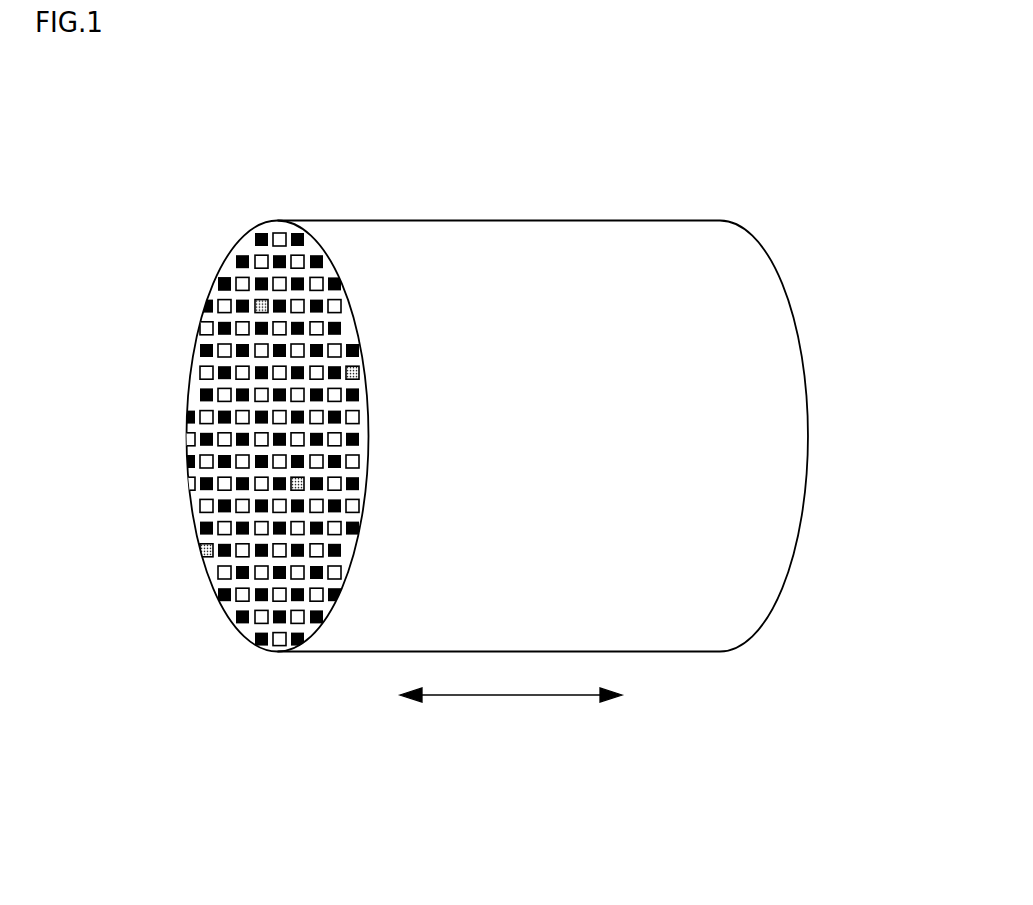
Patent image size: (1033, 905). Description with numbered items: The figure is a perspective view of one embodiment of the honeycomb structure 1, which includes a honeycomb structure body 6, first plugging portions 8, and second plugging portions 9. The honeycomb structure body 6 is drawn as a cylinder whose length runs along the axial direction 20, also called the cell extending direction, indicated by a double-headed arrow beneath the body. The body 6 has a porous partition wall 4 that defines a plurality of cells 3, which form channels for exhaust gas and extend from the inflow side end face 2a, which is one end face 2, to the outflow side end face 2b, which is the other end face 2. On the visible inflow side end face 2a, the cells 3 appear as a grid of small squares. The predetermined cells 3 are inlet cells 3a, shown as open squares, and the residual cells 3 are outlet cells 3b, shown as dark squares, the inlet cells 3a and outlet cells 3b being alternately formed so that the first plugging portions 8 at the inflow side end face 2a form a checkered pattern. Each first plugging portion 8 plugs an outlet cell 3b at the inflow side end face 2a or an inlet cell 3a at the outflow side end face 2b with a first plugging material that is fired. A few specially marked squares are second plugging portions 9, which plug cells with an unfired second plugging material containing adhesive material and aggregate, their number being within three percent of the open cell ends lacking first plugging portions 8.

The honeycomb structure 1 is at (672, 173).
The end face 2 is at (505, 417).
The inflow side end face 2a is at (313, 248).
The outflow side end face 2b is at (777, 600).
The cell 3 is at (217, 283).
The inlet cell 3a is at (206, 328).
The outlet cell 3b is at (224, 283).
The partition wall 4 is at (205, 385).
The honeycomb structure body 6 is at (235, 607).
The first plugging portion 8 is at (224, 283).
The second plugging portion 9 is at (362, 367).
The axial direction 20 is at (498, 698).